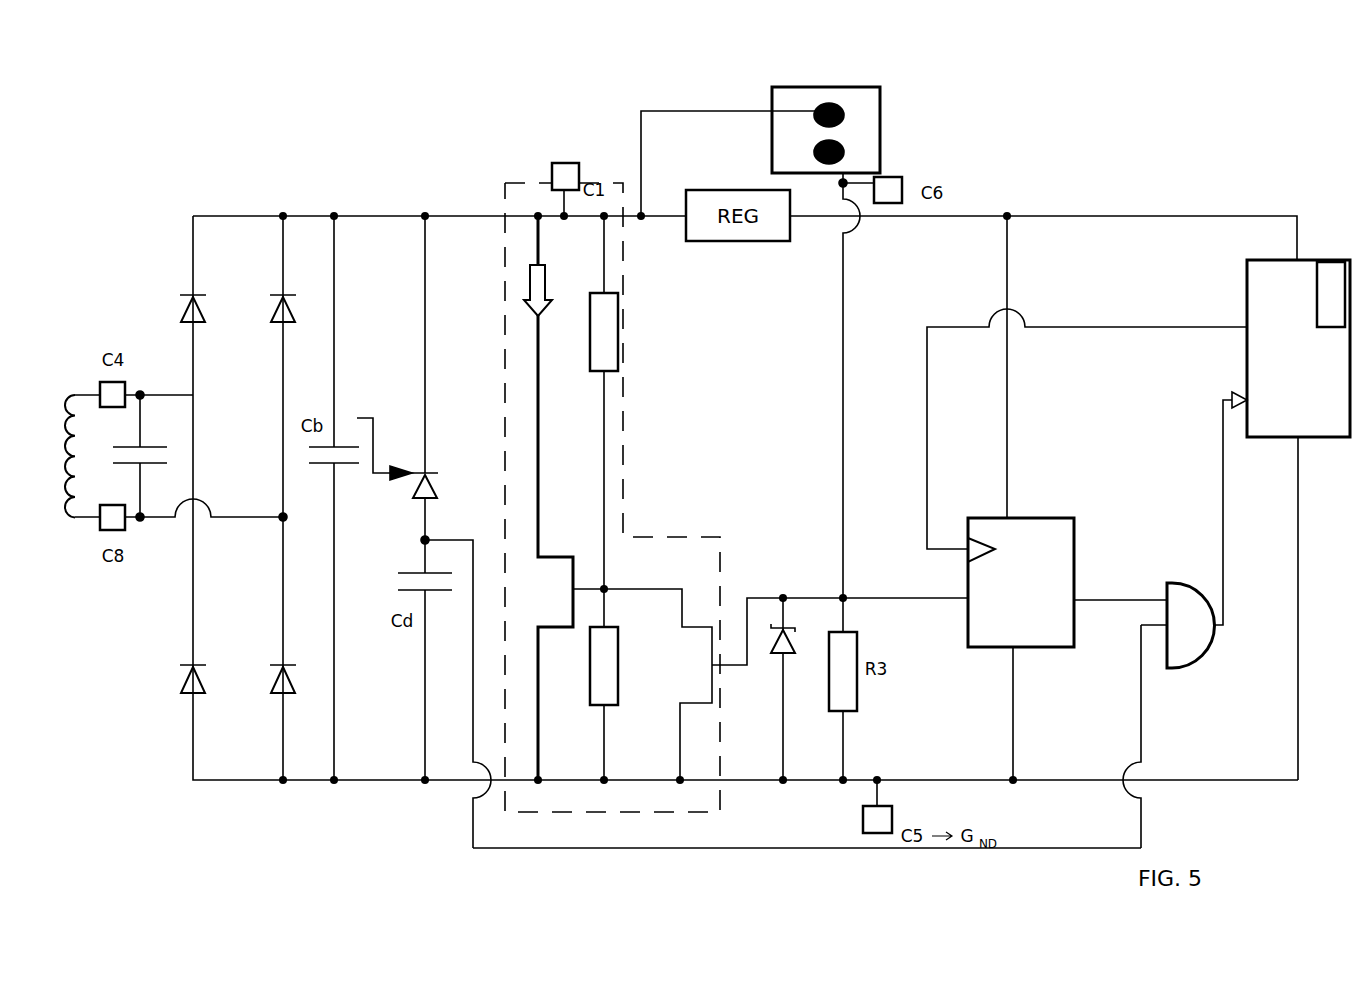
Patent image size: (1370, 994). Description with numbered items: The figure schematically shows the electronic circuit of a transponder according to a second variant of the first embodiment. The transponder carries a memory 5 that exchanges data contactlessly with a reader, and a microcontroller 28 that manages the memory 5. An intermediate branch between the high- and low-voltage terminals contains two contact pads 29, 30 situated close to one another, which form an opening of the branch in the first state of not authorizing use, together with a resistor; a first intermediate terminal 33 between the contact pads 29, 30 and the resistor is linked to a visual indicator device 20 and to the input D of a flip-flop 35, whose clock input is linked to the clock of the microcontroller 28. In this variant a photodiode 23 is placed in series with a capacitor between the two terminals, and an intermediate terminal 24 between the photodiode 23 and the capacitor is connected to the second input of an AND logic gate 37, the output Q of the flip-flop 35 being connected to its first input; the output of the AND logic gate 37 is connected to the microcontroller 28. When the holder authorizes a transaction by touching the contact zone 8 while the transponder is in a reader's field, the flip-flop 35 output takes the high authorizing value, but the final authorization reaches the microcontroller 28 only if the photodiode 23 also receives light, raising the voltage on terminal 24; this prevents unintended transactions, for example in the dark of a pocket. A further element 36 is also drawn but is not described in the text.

The memory 5 is at (1332, 262).
The contact zone 8 is at (828, 100).
The visual indicator device 20 is at (531, 190).
The photodiode 23 is at (448, 487).
The intermediate terminal 24 is at (423, 540).
The microcontroller 28 is at (1299, 341).
The contact pad 29 is at (845, 112).
The contact pad 30 is at (846, 152).
The first intermediate terminal 33 is at (841, 596).
The flip-flop 35 is at (1057, 518).
The ground wire 36 is at (470, 840).
The AND logic gate 37 is at (1183, 668).